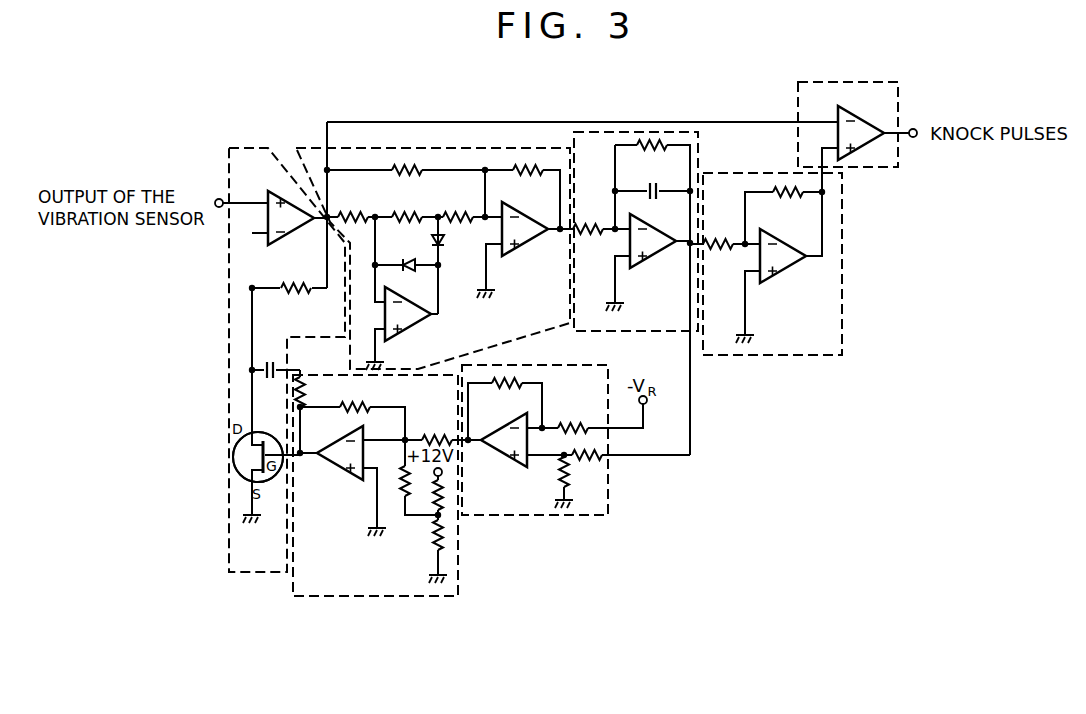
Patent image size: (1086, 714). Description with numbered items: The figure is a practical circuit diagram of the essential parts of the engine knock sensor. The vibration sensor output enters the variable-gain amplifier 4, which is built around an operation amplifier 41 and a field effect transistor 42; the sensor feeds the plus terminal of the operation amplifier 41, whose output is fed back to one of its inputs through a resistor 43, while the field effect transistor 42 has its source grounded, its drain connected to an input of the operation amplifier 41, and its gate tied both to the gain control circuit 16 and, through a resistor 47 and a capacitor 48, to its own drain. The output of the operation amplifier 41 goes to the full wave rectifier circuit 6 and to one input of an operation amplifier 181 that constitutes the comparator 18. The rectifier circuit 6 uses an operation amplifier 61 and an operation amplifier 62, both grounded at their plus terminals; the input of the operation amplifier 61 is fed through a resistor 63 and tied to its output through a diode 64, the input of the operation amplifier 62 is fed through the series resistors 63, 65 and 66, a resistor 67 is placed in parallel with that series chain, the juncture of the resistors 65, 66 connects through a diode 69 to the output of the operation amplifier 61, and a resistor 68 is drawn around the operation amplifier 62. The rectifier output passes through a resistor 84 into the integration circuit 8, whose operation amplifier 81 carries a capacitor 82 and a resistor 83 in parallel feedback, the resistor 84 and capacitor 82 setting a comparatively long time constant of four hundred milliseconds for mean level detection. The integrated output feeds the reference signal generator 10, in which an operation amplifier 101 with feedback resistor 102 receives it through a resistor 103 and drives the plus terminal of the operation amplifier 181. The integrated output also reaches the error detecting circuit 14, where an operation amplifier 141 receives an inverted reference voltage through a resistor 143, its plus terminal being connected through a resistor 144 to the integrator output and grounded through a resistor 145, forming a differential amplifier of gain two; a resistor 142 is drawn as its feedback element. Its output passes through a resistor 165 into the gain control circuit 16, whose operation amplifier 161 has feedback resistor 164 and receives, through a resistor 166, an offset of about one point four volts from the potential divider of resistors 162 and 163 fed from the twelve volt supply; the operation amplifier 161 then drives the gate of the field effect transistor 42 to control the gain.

The variable-gain amplifier 4 is at (267, 146).
The operation amplifier 41 is at (277, 201).
The field effect transistor 42 is at (264, 432).
The resistor 43 is at (297, 282).
The resistor 47 is at (306, 392).
The capacitor 48 is at (271, 360).
The full wave rectifier circuit 6 is at (440, 146).
The operation amplifier 61 is at (418, 324).
The operation amplifier 62 is at (524, 248).
The resistor 63 is at (354, 212).
The diode 64 is at (406, 262).
The resistor 65 is at (408, 212).
The resistor 66 is at (461, 212).
The resistor 67 is at (407, 161).
The resistor 68 is at (529, 172).
The diode 69 is at (443, 243).
The integration circuit 8 is at (609, 130).
The operation amplifier 81 is at (648, 264).
The capacitor 82 is at (655, 184).
The resistor 83 is at (655, 140).
The resistor 84 is at (589, 222).
The reference signal generator 10 is at (730, 357).
The operation amplifier 101 is at (785, 278).
The resistor 102 is at (788, 186).
The resistor 103 is at (719, 238).
The error detecting circuit 14 is at (535, 516).
The operation amplifier 141 is at (508, 466).
The resistor 142 is at (508, 381).
The resistor 143 is at (573, 423).
The resistor 144 is at (590, 458).
The resistor 145 is at (567, 482).
The gain control circuit 16 is at (400, 597).
The operation amplifier 161 is at (342, 476).
The resistor 162 is at (441, 499).
The resistor 163 is at (441, 541).
The resistor 164 is at (365, 405).
The resistor 165 is at (437, 436).
The resistor 166 is at (404, 499).
The comparator 18 is at (842, 81).
The operation amplifier 181 is at (864, 122).